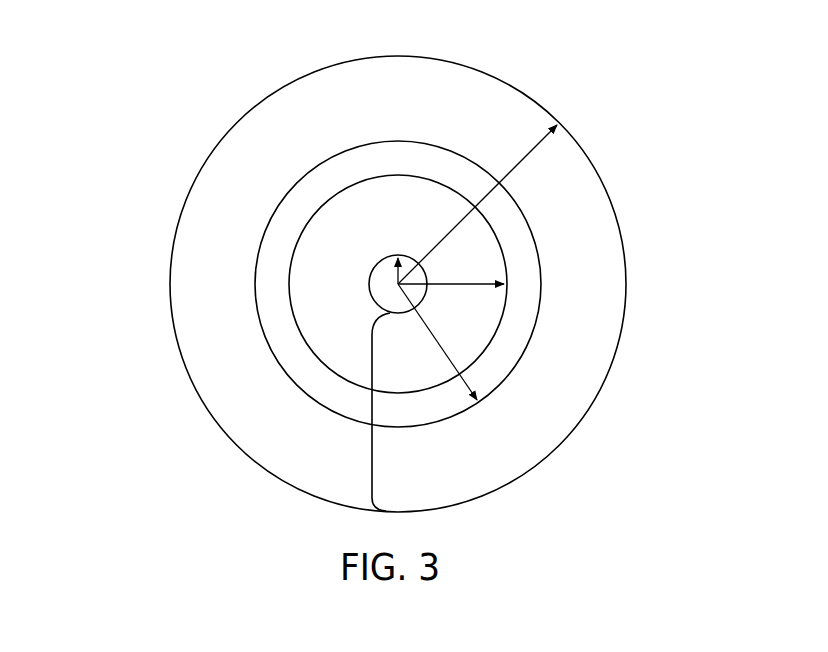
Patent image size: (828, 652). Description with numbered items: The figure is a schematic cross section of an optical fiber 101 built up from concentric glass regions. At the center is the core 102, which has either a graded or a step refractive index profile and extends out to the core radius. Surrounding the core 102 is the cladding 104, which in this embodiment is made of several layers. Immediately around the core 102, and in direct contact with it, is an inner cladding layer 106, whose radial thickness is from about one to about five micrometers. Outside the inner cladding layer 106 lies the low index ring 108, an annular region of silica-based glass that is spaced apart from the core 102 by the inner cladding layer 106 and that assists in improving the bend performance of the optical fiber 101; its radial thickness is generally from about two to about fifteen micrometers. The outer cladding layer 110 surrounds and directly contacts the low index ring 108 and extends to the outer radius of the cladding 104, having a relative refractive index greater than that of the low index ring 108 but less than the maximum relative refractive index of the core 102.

The optical fiber 101 is at (192, 136).
The core 102 is at (374, 268).
The cladding 104 is at (372, 459).
The inner cladding layer 106 is at (290, 281).
The low index ring 108 is at (274, 349).
The outer cladding layer 110 is at (595, 400).